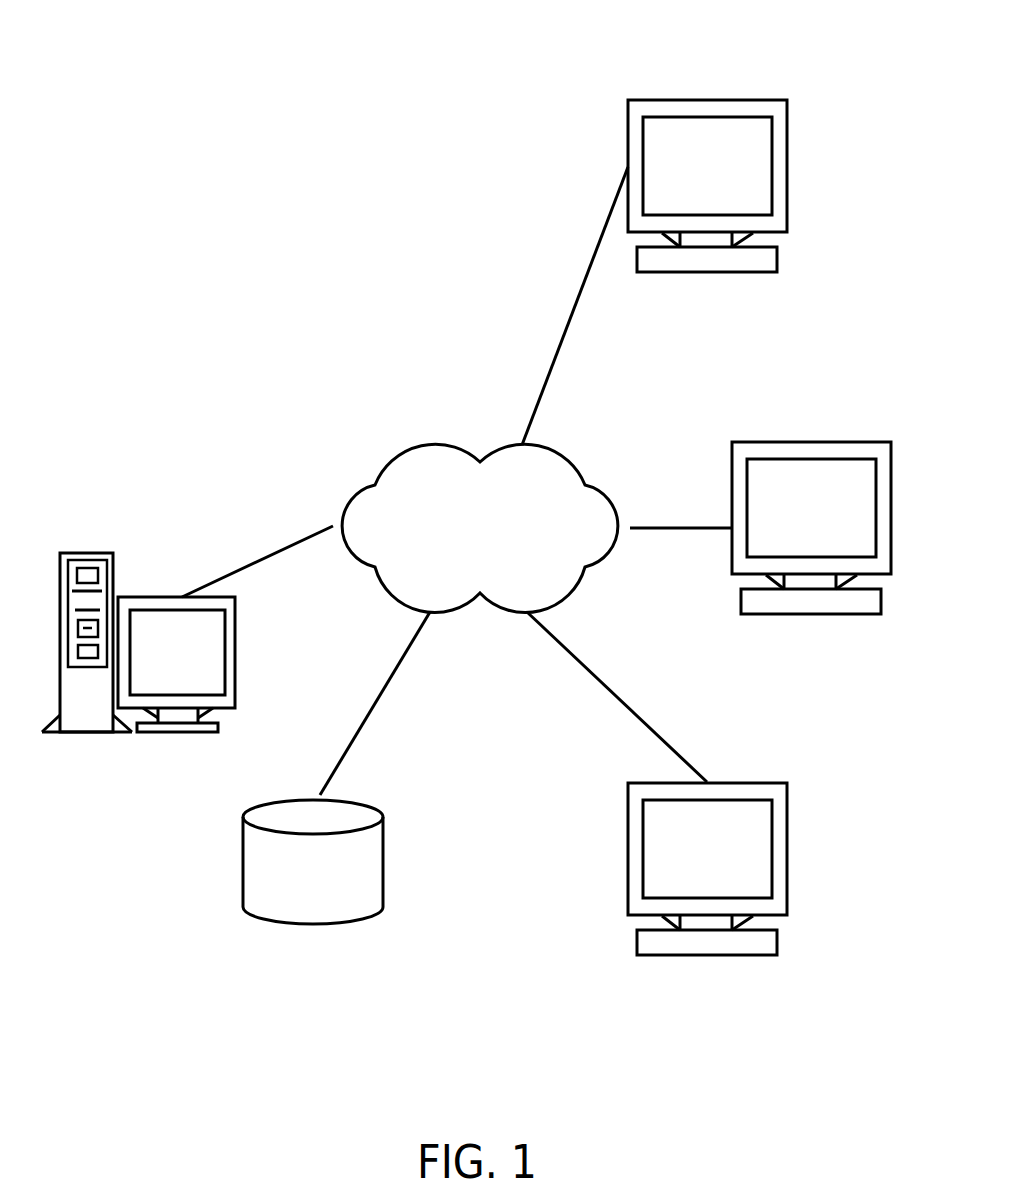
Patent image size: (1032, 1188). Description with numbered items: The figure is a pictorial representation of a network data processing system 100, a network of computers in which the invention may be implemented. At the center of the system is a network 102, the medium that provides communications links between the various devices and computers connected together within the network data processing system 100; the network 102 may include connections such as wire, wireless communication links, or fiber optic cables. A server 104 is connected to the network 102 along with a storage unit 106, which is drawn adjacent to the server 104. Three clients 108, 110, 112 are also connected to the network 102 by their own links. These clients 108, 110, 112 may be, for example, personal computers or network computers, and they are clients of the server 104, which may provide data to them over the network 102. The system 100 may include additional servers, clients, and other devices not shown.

The network data processing system 100 is at (484, 871).
The network 102 is at (427, 458).
The server 104 is at (147, 605).
The storage unit 106 is at (288, 907).
The client 108 is at (680, 110).
The client 110 is at (785, 450).
The client 112 is at (760, 947).